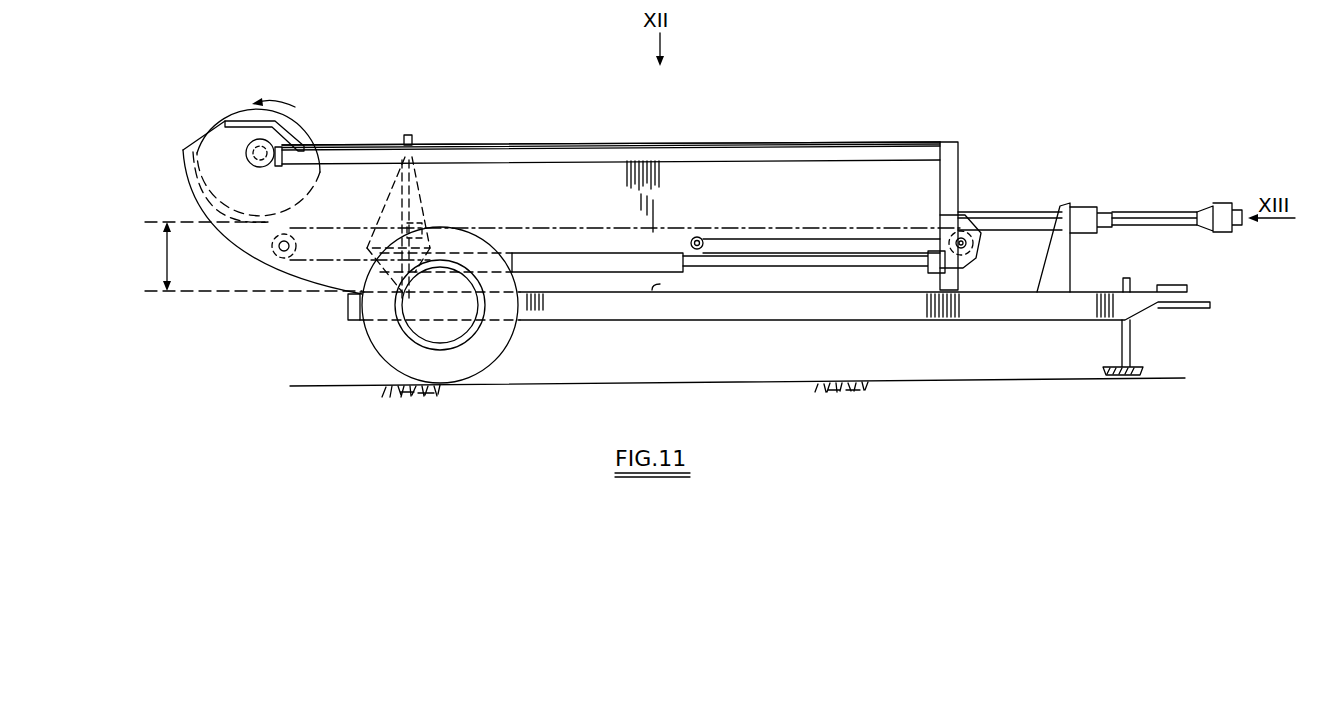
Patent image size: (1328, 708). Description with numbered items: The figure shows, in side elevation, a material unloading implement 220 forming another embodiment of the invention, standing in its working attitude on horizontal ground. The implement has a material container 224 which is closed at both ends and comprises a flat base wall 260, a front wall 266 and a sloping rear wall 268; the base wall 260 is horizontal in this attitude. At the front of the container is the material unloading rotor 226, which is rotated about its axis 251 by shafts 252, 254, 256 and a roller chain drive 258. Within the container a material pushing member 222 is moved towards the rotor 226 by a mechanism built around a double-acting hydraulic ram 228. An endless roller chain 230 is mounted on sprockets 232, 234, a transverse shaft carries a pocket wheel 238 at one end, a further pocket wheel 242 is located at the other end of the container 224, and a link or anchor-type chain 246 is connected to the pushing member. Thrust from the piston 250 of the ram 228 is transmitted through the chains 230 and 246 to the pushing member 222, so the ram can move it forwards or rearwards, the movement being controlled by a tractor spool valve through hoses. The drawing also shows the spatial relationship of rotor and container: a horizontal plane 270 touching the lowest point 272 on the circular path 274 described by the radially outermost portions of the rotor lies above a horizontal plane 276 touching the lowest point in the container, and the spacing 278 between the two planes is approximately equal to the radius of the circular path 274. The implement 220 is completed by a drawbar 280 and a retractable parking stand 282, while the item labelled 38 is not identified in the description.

The material unloading implement 220 is at (842, 126).
The material pushing member 222 is at (413, 134).
The material container 224 is at (733, 178).
The material unloading rotor 226 is at (288, 88).
The double-acting hydraulic ram 228 is at (580, 263).
The endless roller chain 230 is at (777, 241).
The sprocket 232 is at (694, 237).
The sprocket 234 is at (969, 247).
The pocket wheel 238 is at (933, 324).
The pocket wheel 242 is at (284, 258).
The anchor-type chain 246 is at (547, 227).
The piston 250 is at (722, 263).
The rotor axis 251 is at (263, 151).
The shaft 252 is at (1138, 210).
The shaft 254 is at (1023, 215).
The shaft 256 is at (893, 157).
The roller chain drive 258 is at (962, 214).
The flat base wall 260 is at (652, 292).
The front wall 266 is at (947, 183).
The sloping rear wall 268 is at (183, 172).
The horizontal plane 270 is at (169, 220).
The lowest point 272 is at (272, 208).
The circular path 274 is at (303, 145).
The horizontal plane 276 is at (212, 291).
The spacing 278 is at (166, 292).
The drawbar 280 is at (1016, 312).
The retractable parking stand 282 is at (1128, 343).
The support 38 is at (1060, 259).